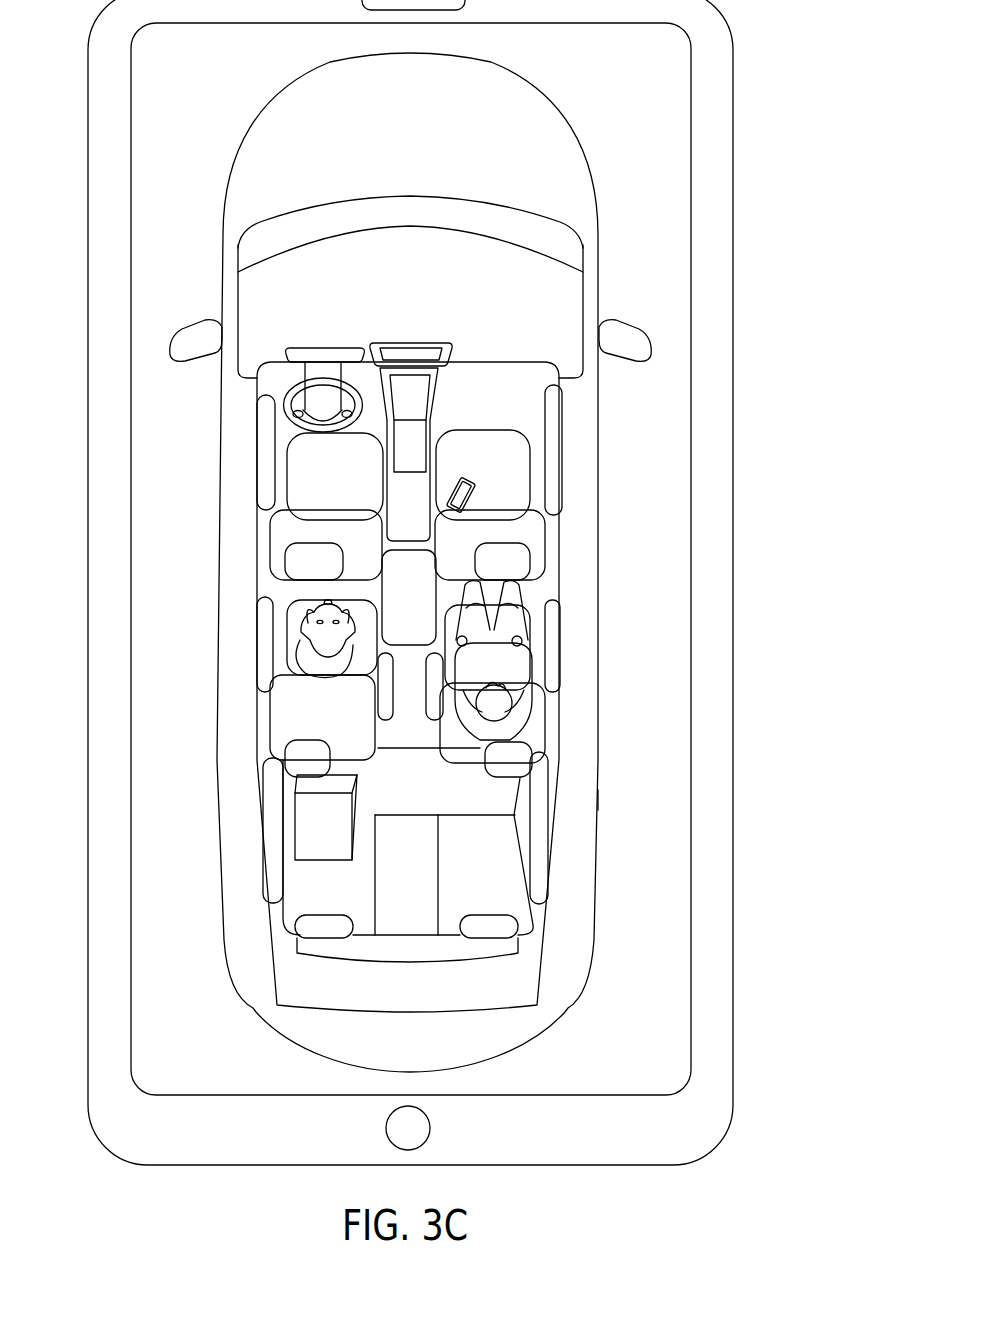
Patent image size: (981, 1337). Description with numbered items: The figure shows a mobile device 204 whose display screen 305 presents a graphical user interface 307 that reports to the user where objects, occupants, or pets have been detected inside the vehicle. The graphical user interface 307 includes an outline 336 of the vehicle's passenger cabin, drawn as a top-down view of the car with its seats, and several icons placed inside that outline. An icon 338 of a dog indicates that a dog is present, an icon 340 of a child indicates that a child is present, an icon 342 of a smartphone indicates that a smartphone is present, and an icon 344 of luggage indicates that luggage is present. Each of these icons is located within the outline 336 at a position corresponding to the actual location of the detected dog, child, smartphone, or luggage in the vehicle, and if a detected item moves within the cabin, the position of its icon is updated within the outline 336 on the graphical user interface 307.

The mobile device 204 is at (733, 137).
The display screen 305 is at (692, 208).
The graphical user interface 307 is at (652, 287).
The outline 336 is at (598, 802).
The icon of a dog 338 is at (305, 620).
The icon of a child 340 is at (518, 658).
The icon of a smartphone 342 is at (473, 497).
The icon of luggage 344 is at (305, 818).